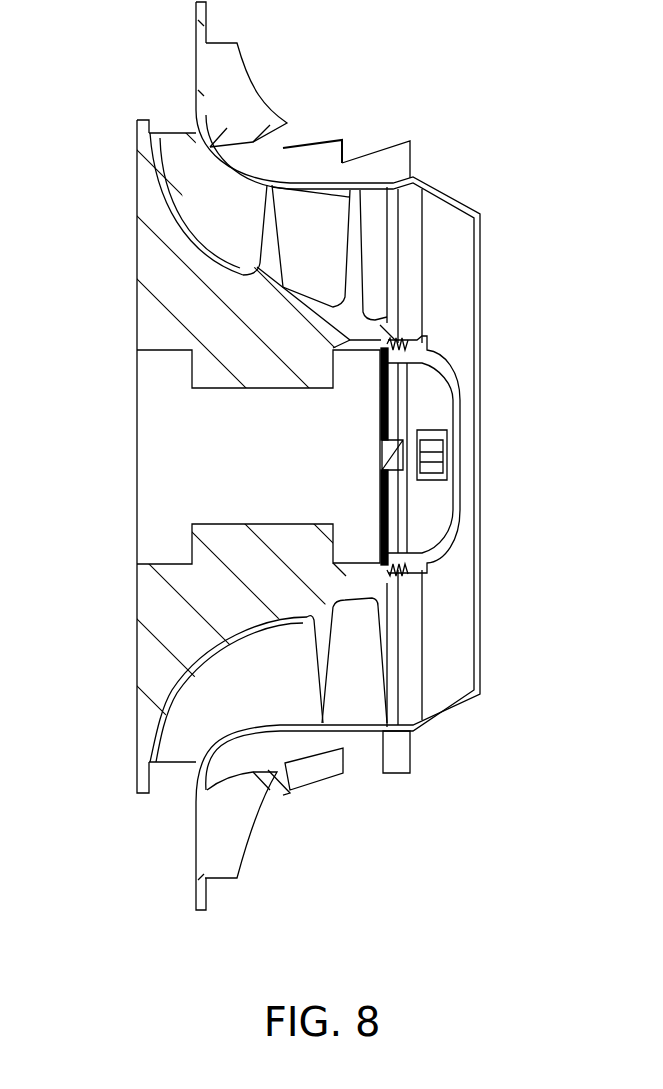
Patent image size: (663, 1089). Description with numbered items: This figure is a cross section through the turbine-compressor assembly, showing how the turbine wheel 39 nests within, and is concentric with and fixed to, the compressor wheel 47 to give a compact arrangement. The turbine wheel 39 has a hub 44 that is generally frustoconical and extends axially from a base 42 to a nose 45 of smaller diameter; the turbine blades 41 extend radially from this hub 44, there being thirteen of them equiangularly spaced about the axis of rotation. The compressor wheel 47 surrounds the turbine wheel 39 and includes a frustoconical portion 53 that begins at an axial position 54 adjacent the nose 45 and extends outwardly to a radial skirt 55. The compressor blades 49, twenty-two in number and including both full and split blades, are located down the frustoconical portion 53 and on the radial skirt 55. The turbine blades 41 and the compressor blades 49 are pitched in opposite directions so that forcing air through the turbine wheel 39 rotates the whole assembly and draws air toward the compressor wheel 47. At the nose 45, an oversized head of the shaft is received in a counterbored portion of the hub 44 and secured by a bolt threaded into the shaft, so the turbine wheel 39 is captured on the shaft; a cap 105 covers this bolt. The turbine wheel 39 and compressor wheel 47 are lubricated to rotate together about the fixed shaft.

The turbine wheel 39 is at (250, 358).
The turbine blades 41 is at (355, 260).
The base 42 is at (136, 327).
The hub 44 is at (151, 597).
The nose 45 is at (405, 330).
The compressor wheel 47 is at (338, 132).
The compressor blades 49 is at (282, 127).
The frustoconical portion 53 is at (290, 150).
The axial position 54 is at (413, 180).
The radial skirt 55 is at (196, 58).
The cap 105 is at (449, 539).